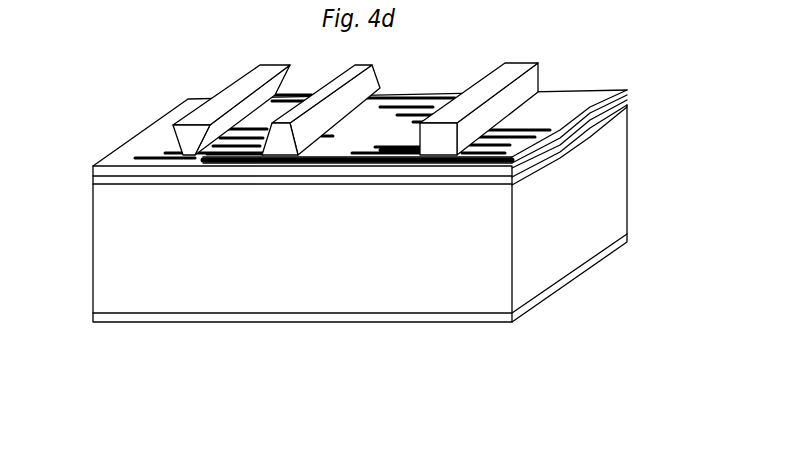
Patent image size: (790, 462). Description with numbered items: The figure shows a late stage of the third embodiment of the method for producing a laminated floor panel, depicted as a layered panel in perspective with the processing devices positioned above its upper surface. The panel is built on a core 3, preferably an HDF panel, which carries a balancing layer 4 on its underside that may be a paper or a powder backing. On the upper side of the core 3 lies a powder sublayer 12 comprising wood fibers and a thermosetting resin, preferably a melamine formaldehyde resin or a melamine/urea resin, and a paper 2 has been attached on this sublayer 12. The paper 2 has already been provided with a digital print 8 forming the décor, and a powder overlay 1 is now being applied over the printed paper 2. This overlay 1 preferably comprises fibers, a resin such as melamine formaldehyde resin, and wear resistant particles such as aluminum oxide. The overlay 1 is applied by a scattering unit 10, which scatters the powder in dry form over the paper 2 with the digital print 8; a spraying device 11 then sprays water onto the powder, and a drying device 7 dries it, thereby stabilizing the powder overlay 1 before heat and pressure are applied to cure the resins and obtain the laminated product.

The powder overlay 1 is at (630, 94).
The paper 2 is at (630, 100).
The core 3 is at (627, 177).
The balancing layer 4 is at (627, 245).
The drying device 7 is at (485, 88).
The digital print 8 is at (405, 108).
The scattering unit 10 is at (228, 101).
The spraying device 11 is at (334, 89).
The powder sublayer 12 is at (630, 108).